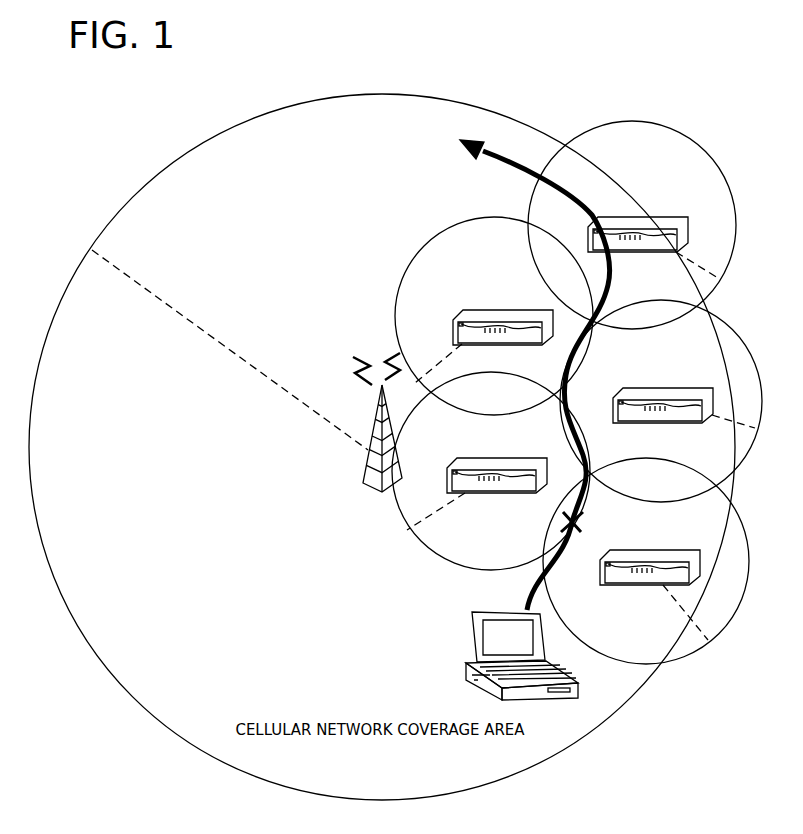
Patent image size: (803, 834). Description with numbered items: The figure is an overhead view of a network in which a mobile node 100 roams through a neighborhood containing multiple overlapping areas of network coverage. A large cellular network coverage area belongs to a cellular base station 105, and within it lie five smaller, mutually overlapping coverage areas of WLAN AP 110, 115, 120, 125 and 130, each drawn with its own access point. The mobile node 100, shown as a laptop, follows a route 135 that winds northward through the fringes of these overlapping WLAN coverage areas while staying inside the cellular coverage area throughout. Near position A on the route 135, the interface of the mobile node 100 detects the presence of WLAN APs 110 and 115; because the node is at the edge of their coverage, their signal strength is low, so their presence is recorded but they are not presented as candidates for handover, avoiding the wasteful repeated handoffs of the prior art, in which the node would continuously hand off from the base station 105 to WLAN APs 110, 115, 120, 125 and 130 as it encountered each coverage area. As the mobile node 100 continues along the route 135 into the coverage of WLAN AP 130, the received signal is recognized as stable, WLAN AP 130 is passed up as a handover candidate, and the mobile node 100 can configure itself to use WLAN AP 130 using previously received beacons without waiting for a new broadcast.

The mobile node 100 is at (473, 648).
The cellular base station 105 is at (367, 468).
The WLAN AP 110 is at (647, 550).
The WLAN AP 115 is at (470, 458).
The WLAN AP 120 is at (635, 388).
The WLAN AP 125 is at (460, 313).
The WLAN AP 130 is at (667, 215).
The route 135 is at (512, 163).
The position A is at (575, 535).